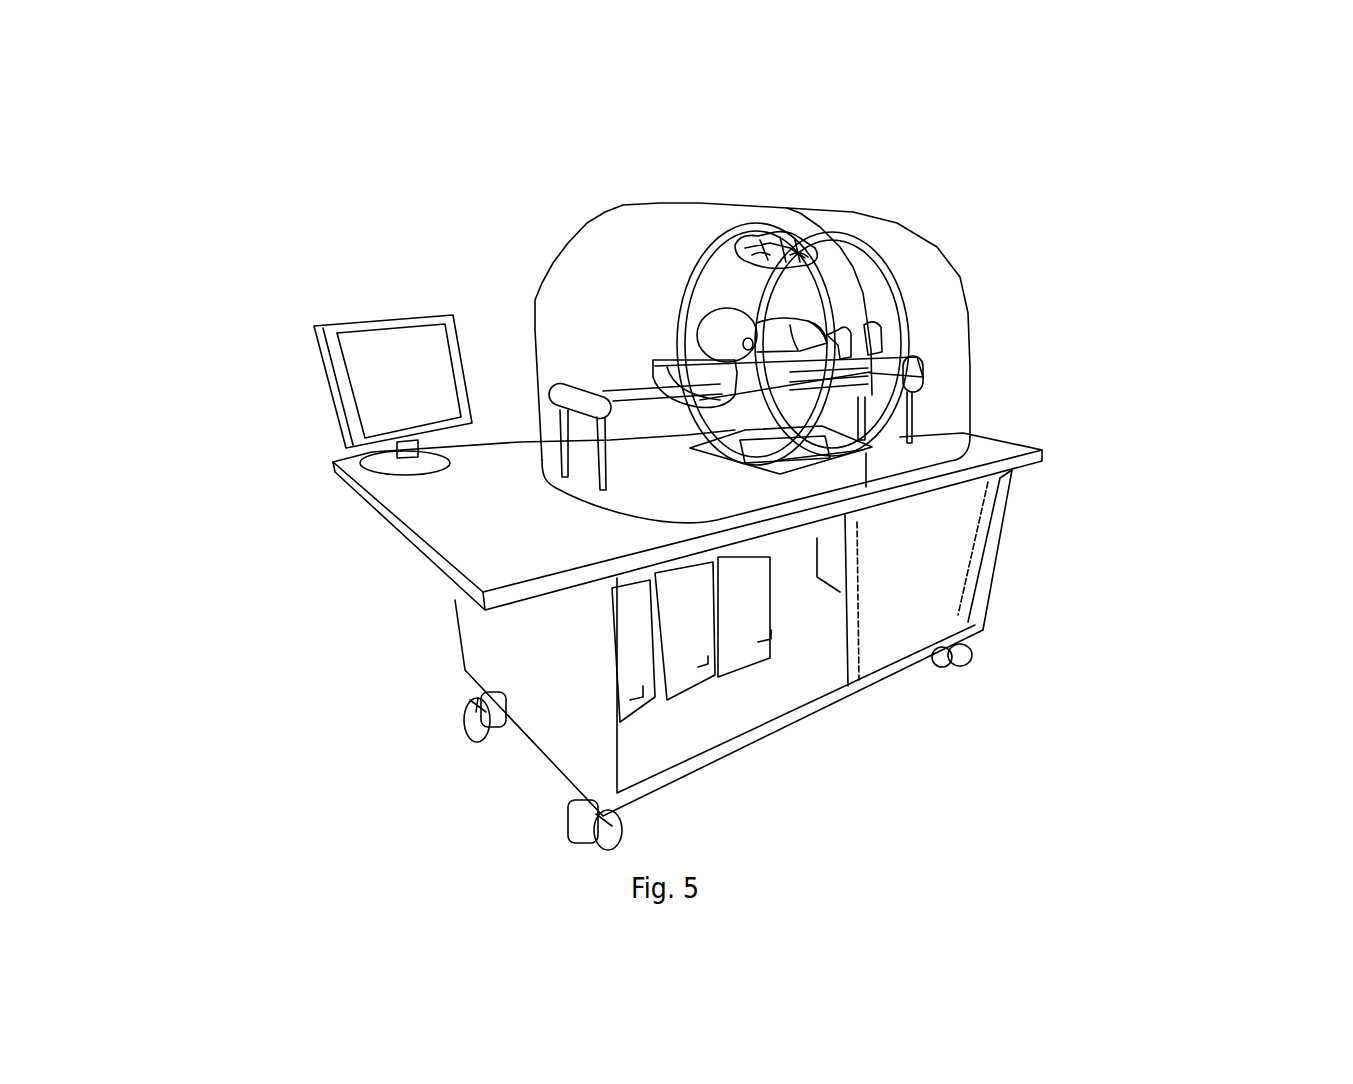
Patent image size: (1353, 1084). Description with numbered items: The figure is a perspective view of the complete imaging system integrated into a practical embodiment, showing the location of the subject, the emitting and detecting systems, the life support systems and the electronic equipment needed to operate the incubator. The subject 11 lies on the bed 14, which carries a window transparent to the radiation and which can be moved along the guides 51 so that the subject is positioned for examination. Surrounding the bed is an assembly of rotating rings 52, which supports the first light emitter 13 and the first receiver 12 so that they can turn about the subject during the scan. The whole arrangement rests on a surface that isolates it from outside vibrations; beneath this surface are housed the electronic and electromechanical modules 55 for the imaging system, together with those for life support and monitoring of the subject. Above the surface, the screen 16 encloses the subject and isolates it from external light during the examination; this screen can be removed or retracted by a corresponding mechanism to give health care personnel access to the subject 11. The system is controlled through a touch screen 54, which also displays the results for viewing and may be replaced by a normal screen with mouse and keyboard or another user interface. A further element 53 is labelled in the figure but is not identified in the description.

The subject 11 is at (717, 332).
The first receiver 12 is at (783, 444).
The first light emitter 13 is at (785, 238).
The bed 14 is at (873, 385).
The screen 16 is at (640, 220).
The guides 51 is at (562, 399).
The assembly of rotating rings 52 is at (895, 280).
The cart table 53 is at (455, 588).
The touch screen 54 is at (378, 365).
The electronic and electromechanical modules 55 is at (730, 657).